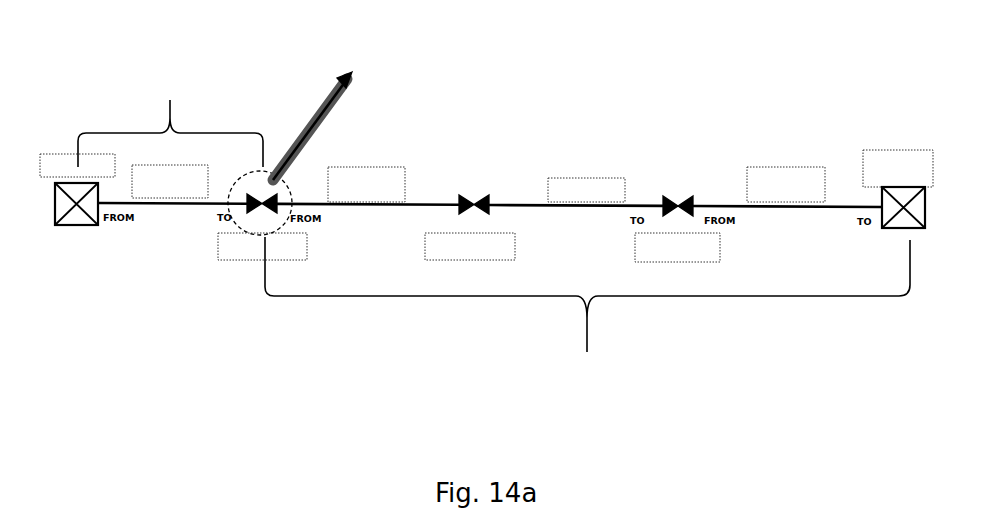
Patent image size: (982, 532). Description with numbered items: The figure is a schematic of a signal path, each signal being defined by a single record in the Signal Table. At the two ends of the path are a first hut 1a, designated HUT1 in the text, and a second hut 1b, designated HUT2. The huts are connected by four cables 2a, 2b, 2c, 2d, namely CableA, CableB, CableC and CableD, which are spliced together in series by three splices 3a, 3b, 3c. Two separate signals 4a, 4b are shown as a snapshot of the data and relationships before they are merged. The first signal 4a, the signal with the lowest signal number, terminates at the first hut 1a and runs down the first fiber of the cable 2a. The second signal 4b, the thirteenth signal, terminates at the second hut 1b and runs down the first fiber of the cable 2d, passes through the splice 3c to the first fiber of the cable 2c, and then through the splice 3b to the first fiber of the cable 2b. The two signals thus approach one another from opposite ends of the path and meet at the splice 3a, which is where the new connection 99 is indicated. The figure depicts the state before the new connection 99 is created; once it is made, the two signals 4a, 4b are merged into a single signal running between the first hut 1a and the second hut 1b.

The first hut 1a is at (83, 243).
The second hut 1b is at (900, 182).
The cable 2a is at (175, 207).
The cable 2b is at (358, 198).
The cable 2c is at (570, 199).
The cable 2d is at (760, 202).
The splice 3a is at (250, 223).
The splice 3b is at (478, 186).
The splice 3c is at (680, 193).
The signal 4a is at (170, 116).
The signal 4b is at (587, 319).
The new connection 99 is at (305, 113).